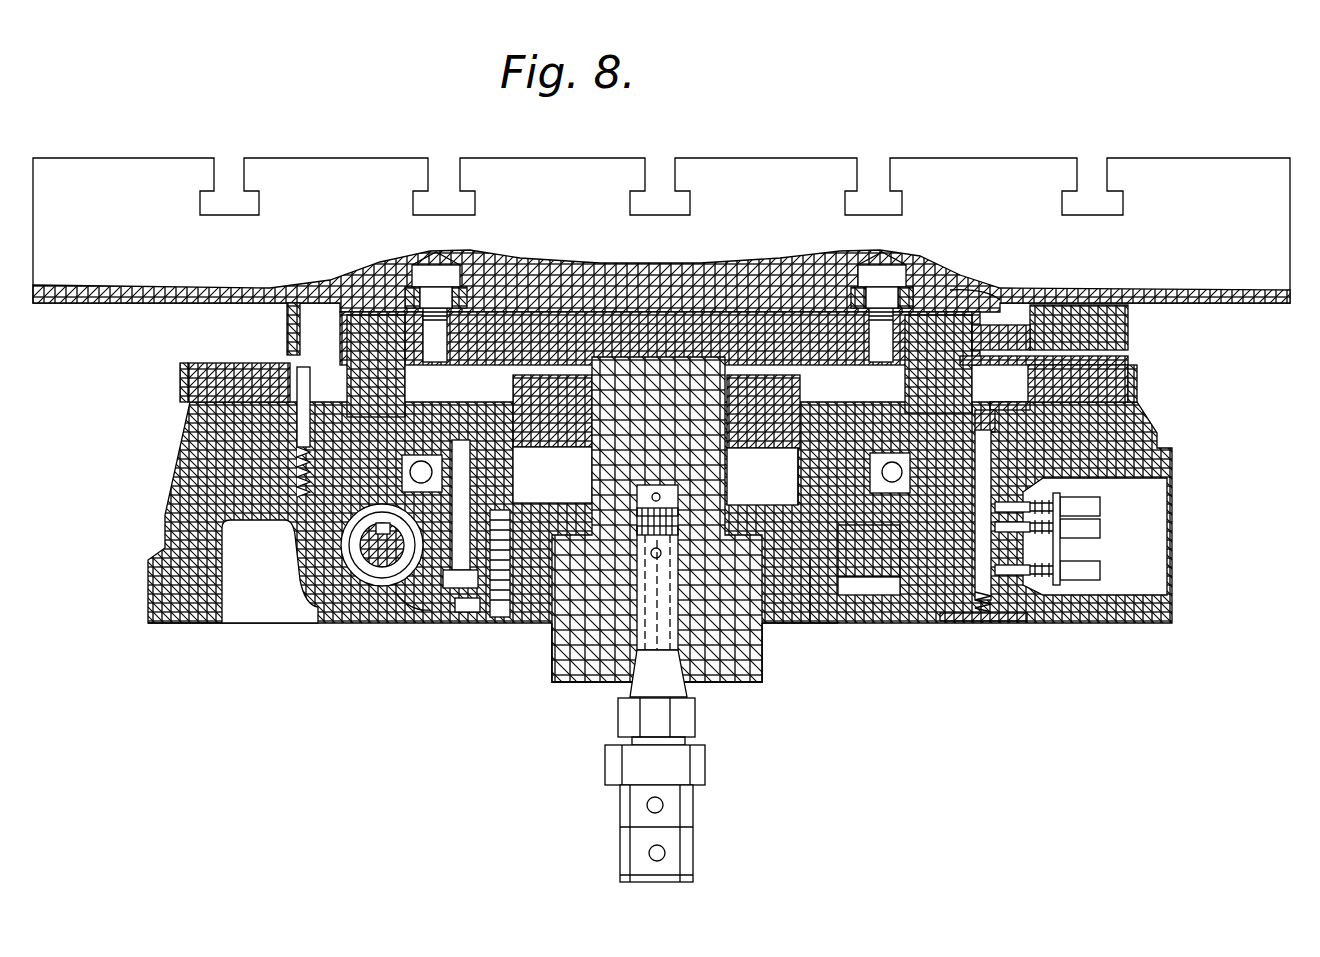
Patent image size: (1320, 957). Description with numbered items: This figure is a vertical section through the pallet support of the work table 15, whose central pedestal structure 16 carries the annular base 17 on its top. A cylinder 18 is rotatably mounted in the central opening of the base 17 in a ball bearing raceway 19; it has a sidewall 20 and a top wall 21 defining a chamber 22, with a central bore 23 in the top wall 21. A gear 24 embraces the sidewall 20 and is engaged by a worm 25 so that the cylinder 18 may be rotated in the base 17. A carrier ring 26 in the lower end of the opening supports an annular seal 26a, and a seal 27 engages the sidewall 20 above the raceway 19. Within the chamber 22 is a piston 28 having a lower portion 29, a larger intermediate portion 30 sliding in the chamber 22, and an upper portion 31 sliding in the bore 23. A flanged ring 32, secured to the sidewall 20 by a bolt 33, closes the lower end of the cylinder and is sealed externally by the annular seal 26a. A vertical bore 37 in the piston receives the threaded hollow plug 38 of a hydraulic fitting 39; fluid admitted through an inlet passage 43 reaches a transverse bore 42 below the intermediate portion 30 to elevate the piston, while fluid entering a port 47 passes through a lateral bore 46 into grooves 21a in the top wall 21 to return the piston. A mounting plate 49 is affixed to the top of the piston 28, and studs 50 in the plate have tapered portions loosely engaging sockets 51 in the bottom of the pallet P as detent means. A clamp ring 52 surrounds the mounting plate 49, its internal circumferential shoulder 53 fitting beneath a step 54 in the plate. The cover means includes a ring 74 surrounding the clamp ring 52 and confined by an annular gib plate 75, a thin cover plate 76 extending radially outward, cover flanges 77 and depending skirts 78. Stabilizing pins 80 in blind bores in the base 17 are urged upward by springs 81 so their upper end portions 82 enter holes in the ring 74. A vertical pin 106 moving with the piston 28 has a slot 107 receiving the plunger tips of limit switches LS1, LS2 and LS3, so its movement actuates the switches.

The pallet P is at (155, 147).
The work table 15 is at (142, 520).
The central pedestal structure 16 is at (265, 625).
The base 17 is at (186, 625).
The cylinder 18 is at (532, 640).
The ball bearing raceway 19 is at (410, 468).
The cylinder sidewall 20 is at (818, 600).
The cylinder top wall 21 is at (762, 476).
The grooves 21a is at (763, 411).
The chamber 22 is at (552, 475).
The central bore 23 is at (590, 405).
The gear 24 is at (880, 555).
The worm 25 is at (375, 572).
The carrier ring 26 is at (405, 625).
The annular seal 26a is at (925, 600).
The seal 27 is at (900, 458).
The piston 28 is at (517, 696).
The lower portion 29 is at (570, 682).
The intermediate portion 30 is at (790, 505).
The upper portion 31 is at (657, 519).
The flanged ring 32 is at (785, 625).
The bolt 33 is at (480, 614).
The vertical bore 37 is at (678, 583).
The threaded hollow plug 38 is at (690, 690).
The hydraulic fitting 39 is at (737, 775).
The transverse bore 42 is at (650, 553).
The inlet passage 43 is at (665, 853).
The lateral bore 46 is at (656, 485).
The port 47 is at (663, 805).
The mounting plate 49 is at (762, 312).
The studs 50 is at (450, 322).
The sockets 51 is at (405, 293).
The clamp ring 52 is at (963, 300).
The internal circumferential shoulder 53 is at (938, 364).
The step 54 is at (376, 366).
The ring 74 is at (1010, 402).
The gib plate 75 is at (990, 422).
The cover plate 76 is at (1065, 306).
The cover flanges 77 is at (1128, 360).
The skirts 78 is at (180, 385).
The stabilizing pins 80 is at (297, 436).
The springs 81 is at (300, 465).
The upper end portions 82 is at (300, 360).
The vertical pin 106 is at (975, 595).
The slot 107 is at (1060, 548).
The limit switch LS1 is at (1100, 572).
The limit switch LS2 is at (1100, 530).
The limit switch LS3 is at (1093, 507).